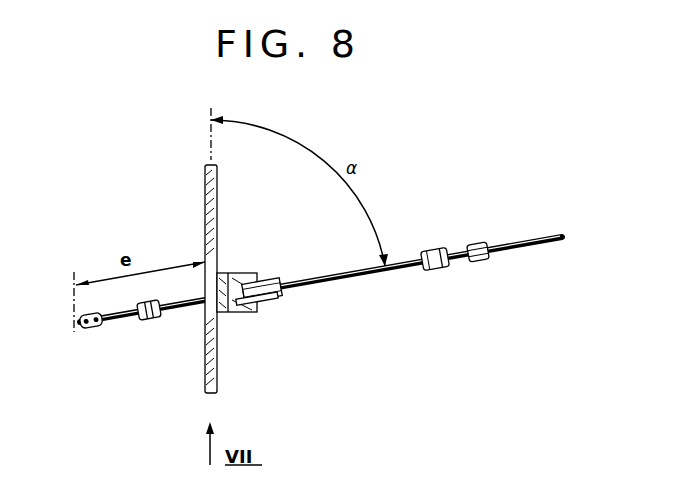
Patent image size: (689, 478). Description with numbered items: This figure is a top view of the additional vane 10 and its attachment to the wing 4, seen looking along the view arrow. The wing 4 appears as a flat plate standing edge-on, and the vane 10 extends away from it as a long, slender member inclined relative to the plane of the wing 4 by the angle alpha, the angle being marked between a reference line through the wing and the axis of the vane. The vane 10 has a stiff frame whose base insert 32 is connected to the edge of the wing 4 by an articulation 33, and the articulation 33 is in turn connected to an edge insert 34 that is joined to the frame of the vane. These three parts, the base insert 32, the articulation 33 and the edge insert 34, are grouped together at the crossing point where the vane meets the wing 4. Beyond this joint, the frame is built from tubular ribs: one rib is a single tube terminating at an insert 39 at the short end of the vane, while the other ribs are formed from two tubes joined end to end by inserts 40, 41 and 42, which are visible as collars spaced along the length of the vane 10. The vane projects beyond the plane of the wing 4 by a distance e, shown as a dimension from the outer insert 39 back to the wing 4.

The wing 4 is at (213, 203).
The additional vane 10 is at (540, 242).
The base insert 32 is at (278, 296).
The articulation 33 is at (253, 281).
The edge insert 34 is at (228, 273).
The insert 39 is at (95, 328).
The insert 40 is at (150, 318).
The insert 41 is at (435, 249).
The insert 42 is at (480, 243).